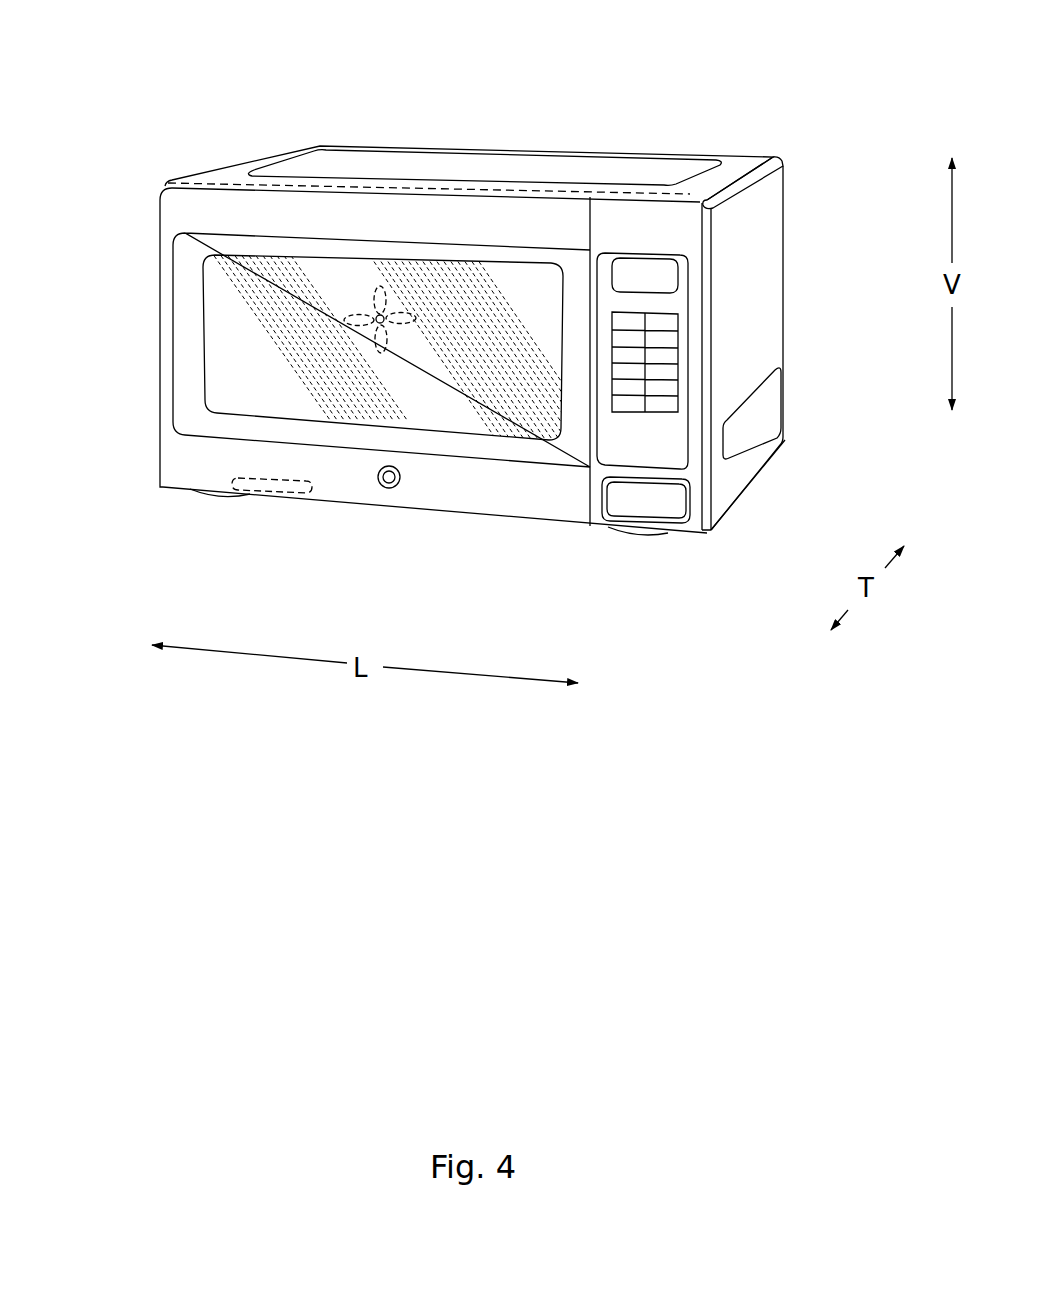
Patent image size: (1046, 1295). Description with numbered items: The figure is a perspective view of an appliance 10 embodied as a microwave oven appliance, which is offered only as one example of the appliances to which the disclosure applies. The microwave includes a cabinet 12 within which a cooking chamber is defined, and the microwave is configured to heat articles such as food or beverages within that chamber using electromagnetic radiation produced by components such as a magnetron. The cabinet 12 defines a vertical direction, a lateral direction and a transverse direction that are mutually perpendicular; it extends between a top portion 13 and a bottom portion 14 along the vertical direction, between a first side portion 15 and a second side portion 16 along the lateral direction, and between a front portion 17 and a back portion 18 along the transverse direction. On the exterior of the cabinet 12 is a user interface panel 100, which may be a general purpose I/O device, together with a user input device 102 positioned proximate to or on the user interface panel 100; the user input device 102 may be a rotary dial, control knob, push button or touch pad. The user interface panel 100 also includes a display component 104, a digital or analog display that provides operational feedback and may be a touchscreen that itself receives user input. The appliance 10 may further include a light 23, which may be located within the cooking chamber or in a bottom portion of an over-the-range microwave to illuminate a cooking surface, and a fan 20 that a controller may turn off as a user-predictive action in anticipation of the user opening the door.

The appliance 10 is at (182, 80).
The cabinet 12 is at (405, 163).
The top portion 13 is at (755, 168).
The bottom portion 14 is at (748, 490).
The first side portion 15 is at (158, 345).
The second side portion 16 is at (752, 288).
The front portion 17 is at (152, 185).
The back portion 18 is at (312, 146).
The fan 20 is at (374, 338).
The light 23 is at (278, 491).
The user interface panel 100 is at (643, 388).
The user input device 102 is at (660, 357).
The display component 104 is at (655, 277).